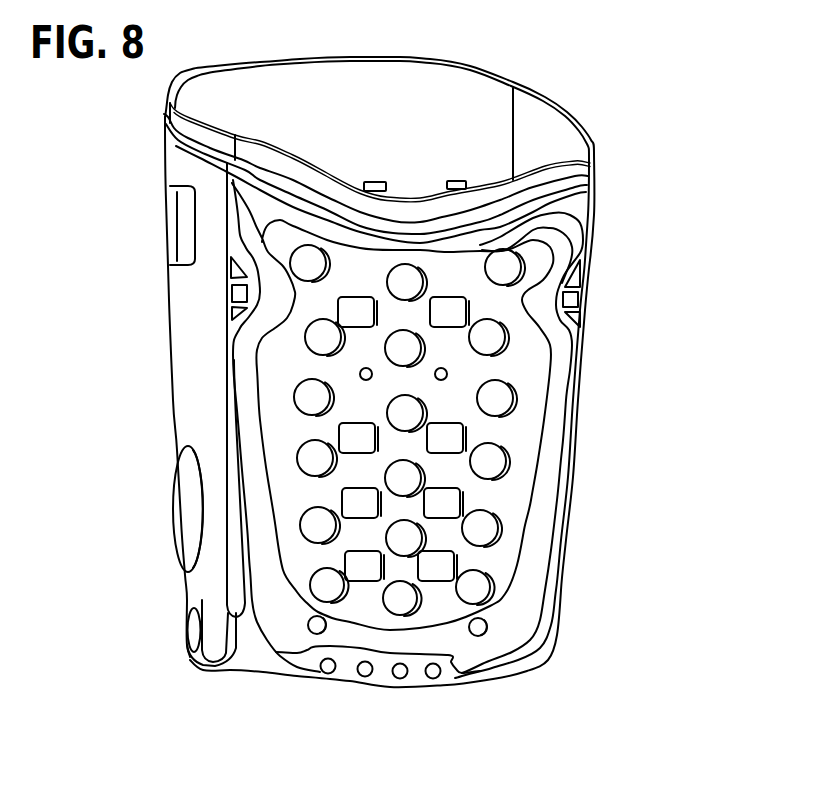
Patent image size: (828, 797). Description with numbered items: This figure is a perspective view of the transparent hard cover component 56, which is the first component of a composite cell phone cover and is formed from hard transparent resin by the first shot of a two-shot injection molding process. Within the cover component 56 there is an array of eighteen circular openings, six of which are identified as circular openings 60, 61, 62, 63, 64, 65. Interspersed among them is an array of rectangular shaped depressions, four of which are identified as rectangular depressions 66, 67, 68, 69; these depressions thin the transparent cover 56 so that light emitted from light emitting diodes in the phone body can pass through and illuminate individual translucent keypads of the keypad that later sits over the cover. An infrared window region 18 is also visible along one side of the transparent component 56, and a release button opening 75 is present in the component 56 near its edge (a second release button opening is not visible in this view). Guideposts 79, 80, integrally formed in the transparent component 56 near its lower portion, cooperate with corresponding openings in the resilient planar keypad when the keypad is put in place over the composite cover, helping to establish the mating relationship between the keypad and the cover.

The transparent hard cover component 56 is at (612, 226).
The release button opening 75 is at (171, 208).
The infrared window region 18 is at (183, 540).
The circular opening 60 is at (305, 268).
The circular opening 61 is at (318, 338).
The circular opening 62 is at (398, 480).
The circular opening 63 is at (476, 592).
The circular opening 64 is at (405, 538).
The circular opening 65 is at (494, 400).
The rectangular depression 66 is at (458, 316).
The rectangular depression 67 is at (443, 432).
The rectangular depression 68 is at (448, 498).
The rectangular depression 69 is at (362, 578).
The guidepost 79 is at (310, 630).
The guidepost 80 is at (478, 637).